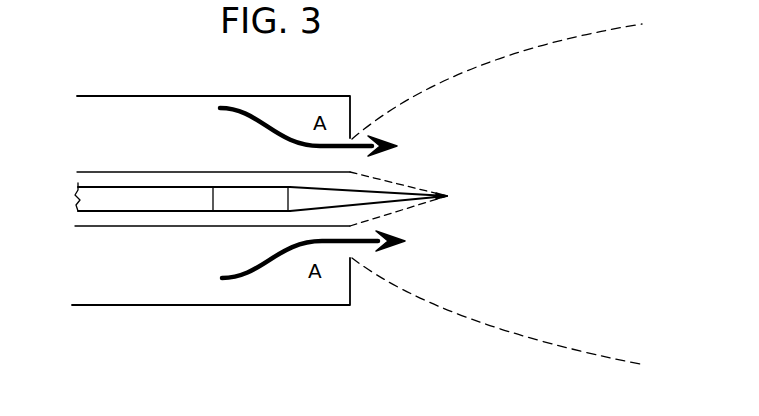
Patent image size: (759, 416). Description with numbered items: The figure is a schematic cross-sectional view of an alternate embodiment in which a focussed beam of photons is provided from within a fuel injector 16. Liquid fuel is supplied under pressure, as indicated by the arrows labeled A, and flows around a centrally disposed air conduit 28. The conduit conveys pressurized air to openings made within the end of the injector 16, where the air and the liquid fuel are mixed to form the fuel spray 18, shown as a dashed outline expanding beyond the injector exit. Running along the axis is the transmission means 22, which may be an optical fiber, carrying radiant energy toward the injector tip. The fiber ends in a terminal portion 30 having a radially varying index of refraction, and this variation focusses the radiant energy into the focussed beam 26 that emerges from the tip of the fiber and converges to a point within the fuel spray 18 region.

The fuel injector 16 is at (131, 96).
The fuel spray 18 is at (473, 66).
The transmission means 22 is at (102, 212).
The focussed beam 26 is at (375, 190).
The air conduit 28 is at (103, 173).
The terminal portion 30 is at (250, 187).